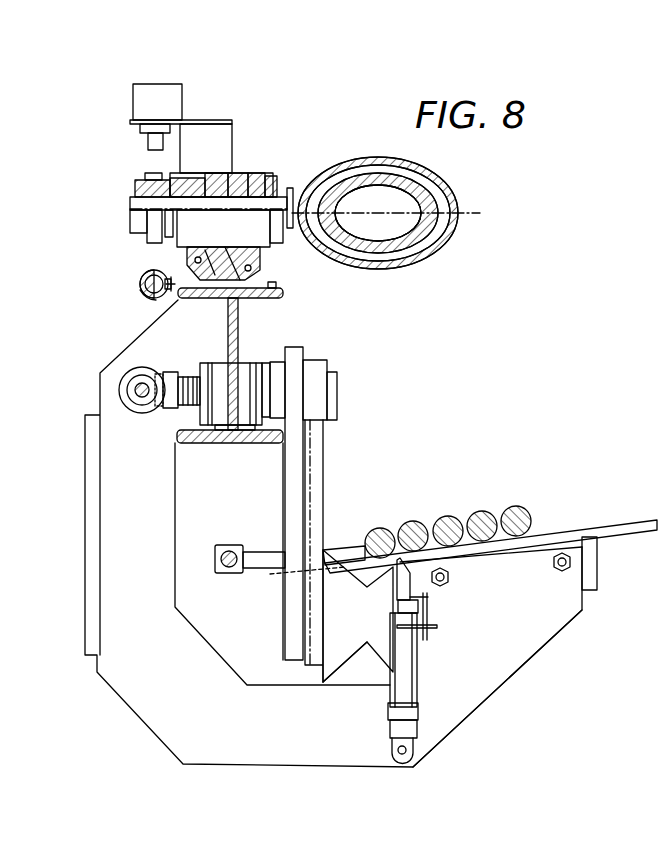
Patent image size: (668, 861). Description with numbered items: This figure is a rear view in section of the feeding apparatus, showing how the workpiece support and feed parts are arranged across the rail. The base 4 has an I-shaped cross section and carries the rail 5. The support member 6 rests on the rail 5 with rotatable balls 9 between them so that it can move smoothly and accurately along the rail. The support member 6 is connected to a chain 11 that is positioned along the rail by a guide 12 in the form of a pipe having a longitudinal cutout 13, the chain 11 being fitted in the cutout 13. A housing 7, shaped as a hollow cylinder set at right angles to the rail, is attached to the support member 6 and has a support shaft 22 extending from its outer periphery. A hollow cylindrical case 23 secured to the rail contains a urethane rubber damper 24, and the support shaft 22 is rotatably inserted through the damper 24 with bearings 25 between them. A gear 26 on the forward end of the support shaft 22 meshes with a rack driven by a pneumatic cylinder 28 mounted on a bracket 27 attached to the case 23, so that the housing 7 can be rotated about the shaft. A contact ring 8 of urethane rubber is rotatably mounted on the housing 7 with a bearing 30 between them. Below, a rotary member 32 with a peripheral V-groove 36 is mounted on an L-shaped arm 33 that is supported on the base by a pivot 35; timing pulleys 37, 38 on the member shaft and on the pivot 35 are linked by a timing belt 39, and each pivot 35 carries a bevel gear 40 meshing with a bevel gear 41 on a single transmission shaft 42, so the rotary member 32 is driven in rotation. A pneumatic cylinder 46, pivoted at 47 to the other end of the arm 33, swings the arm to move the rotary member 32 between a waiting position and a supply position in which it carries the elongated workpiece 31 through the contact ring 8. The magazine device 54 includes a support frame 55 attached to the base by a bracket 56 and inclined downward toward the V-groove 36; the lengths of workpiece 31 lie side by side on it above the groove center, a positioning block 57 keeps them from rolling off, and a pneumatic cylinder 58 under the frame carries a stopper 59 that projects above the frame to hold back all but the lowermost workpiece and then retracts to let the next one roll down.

The base 4 is at (238, 336).
The rail 5 is at (238, 294).
The support member 6 is at (257, 256).
The housing 7 is at (378, 162).
The contact ring 8 is at (414, 227).
The rotatable balls 9 is at (218, 250).
The chain 11 is at (152, 299).
The guide 12 is at (140, 287).
The longitudinal cutout 13 is at (167, 276).
The support shaft 22 is at (222, 193).
The hollow cylindrical case 23 is at (236, 178).
The damper 24 is at (254, 182).
The bearings 25 is at (181, 177).
The gear 26 is at (152, 172).
The bracket 27 is at (197, 129).
The pneumatic cylinder 28 is at (133, 100).
The bearing 30 is at (432, 195).
The elongated workpiece 31 is at (478, 520).
The rotary member 32 is at (390, 655).
The L-shaped arm 33 is at (292, 506).
The pivot 35 is at (337, 392).
The V-groove 36 is at (342, 667).
The timing pulley 37 is at (308, 623).
The timing pulley 38 is at (317, 372).
The timing belt 39 is at (327, 477).
The bevel gear 40 is at (161, 374).
The bevel gear 41 is at (139, 374).
The transmission shaft 42 is at (143, 398).
The pneumatic cylinder 46 is at (230, 576).
The pivot 47 is at (273, 580).
The magazine device 54 is at (549, 515).
The support frame 55 is at (636, 520).
The bracket 56 is at (515, 665).
The positioning block 57 is at (348, 550).
The pneumatic cylinder 58 is at (410, 693).
The stopper 59 is at (408, 585).